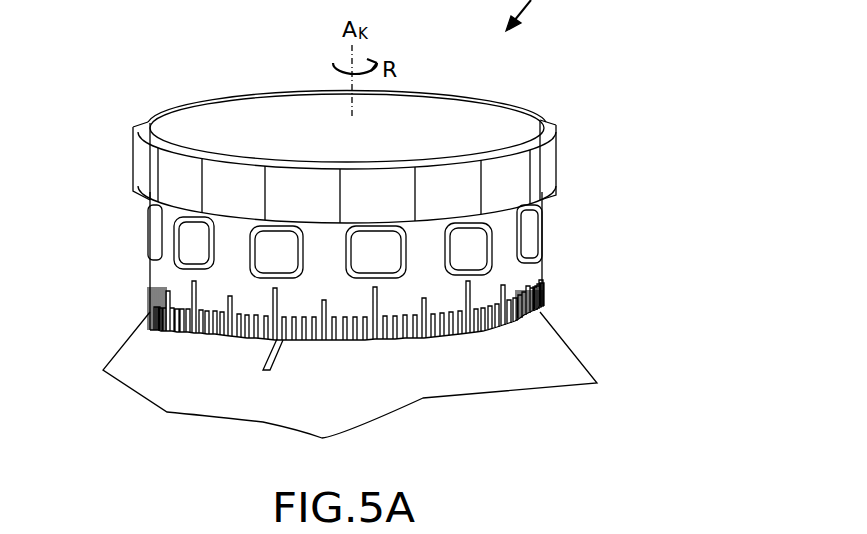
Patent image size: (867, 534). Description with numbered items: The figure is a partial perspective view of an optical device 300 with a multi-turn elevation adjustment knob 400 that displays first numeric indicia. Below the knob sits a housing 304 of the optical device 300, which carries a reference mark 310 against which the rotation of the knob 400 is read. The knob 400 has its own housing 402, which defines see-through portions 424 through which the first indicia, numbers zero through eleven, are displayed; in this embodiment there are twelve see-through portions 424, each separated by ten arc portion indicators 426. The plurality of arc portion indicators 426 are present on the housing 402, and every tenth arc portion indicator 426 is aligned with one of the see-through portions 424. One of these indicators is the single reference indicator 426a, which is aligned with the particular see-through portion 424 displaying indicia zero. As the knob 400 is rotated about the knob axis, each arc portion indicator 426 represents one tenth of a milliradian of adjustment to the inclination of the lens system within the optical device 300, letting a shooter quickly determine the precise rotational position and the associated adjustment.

The optical device 300 is at (678, 134).
The housing 304 is at (565, 368).
The reference mark 310 is at (266, 369).
The elevation adjustment knob 400 is at (543, 532).
The housing 402 is at (270, 112).
The see-through portions 424 is at (270, 243).
The arc portion indicators 426 is at (510, 313).
The single reference indicator 426a is at (270, 291).